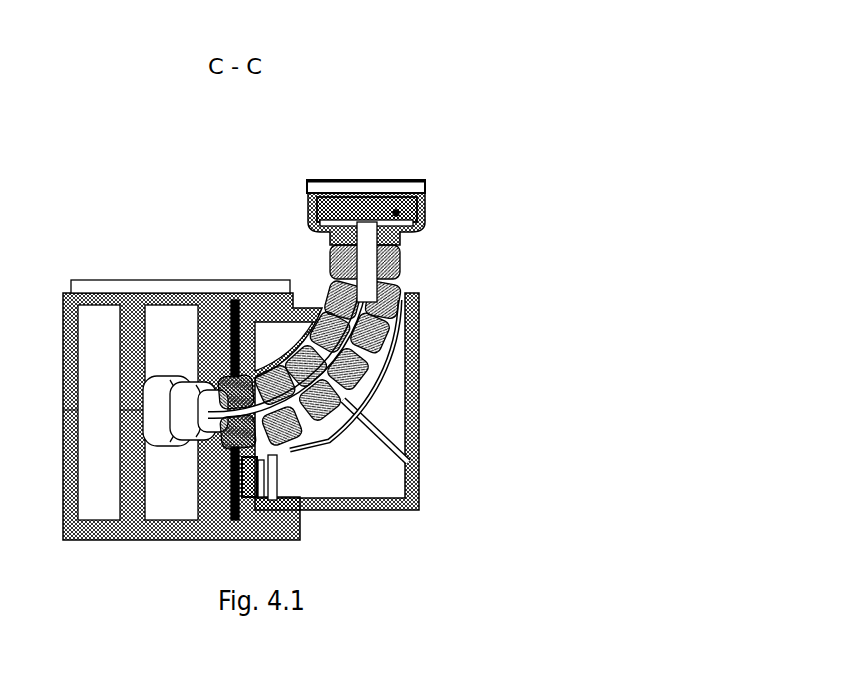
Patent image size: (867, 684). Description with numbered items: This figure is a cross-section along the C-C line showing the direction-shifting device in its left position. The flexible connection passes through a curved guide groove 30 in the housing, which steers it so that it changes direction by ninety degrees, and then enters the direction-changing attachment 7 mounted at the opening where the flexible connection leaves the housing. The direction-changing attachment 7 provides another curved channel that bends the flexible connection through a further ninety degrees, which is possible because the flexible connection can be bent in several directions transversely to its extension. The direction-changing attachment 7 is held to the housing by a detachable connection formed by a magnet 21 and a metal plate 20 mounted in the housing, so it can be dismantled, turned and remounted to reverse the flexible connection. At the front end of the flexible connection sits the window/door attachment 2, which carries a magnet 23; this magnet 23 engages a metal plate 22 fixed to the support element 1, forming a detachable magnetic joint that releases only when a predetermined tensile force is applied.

The support element 1 is at (418, 237).
The metal plate 22 is at (422, 198).
The magnet 23 is at (418, 204).
The window/door attachment 2 is at (399, 245).
The curved guide groove 30 is at (395, 343).
The metal plate 20 is at (237, 347).
The magnet 21 is at (247, 477).
The direction-changing attachment 7 is at (366, 510).